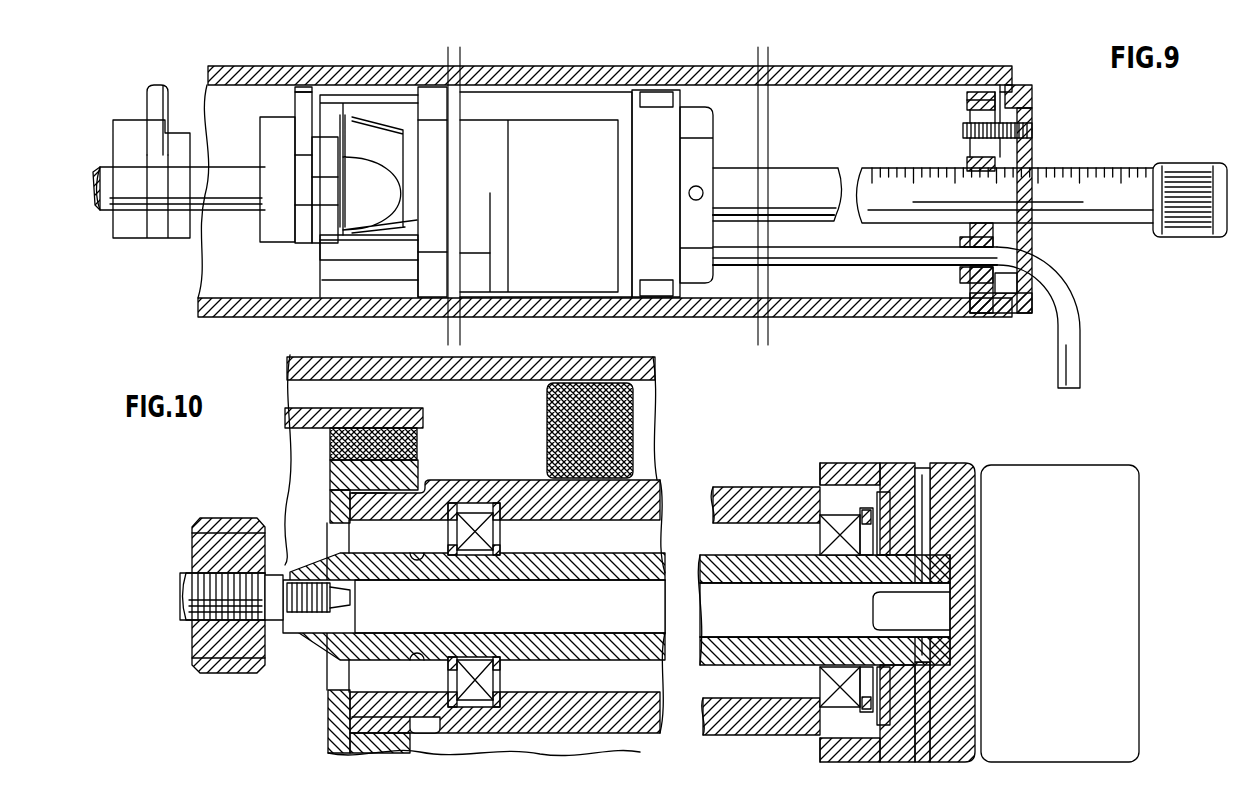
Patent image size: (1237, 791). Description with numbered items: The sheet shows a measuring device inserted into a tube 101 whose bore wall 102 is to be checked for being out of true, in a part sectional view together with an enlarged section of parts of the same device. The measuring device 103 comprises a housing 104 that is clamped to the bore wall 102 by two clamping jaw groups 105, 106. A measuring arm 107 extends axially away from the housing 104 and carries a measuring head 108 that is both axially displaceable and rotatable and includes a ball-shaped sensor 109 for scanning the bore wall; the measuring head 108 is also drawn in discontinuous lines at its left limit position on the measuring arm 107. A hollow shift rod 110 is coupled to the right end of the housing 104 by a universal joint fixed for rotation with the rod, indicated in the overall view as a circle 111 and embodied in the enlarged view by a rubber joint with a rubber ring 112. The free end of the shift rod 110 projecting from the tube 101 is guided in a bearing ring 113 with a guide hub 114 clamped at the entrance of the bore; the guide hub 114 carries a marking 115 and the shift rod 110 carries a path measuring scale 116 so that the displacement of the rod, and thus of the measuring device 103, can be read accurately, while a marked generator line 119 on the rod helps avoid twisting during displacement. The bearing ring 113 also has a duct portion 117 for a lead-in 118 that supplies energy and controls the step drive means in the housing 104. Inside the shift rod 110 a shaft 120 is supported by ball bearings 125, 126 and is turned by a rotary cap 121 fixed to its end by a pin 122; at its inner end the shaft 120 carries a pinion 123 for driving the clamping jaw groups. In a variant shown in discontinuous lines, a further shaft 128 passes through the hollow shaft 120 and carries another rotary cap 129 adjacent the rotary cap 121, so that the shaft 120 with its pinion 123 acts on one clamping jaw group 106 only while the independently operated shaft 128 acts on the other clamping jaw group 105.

In FIG. 9, the tube 101 is at (870, 72).
In FIG. 9, the bore wall 102 is at (915, 100).
In FIG. 10, the bore wall 102 is at (311, 384).
In FIG. 9, the measuring device 103 is at (534, 110).
In FIG. 9, the housing 104 is at (592, 121).
In FIG. 10, the housing 104 is at (335, 407).
In FIG. 9, the clamping jaw group 105 is at (382, 96).
In FIG. 9, the clamping jaw group 106 is at (660, 92).
In FIG. 9, the measuring arm 107 is at (231, 182).
In FIG. 9, the measuring head 108 is at (126, 118).
In FIG. 9, the ball-shaped sensor 109 is at (306, 87).
In FIG. 9, the shift rod 110 is at (797, 160).
In FIG. 10, the shift rod 110 is at (792, 486).
In FIG. 9, the universal joint 111 is at (696, 186).
In FIG. 10, the rubber ring 112 is at (371, 440).
In FIG. 9, the bearing ring 113 is at (1032, 100).
In FIG. 9, the guide hub 114 is at (1020, 236).
In FIG. 9, the marking 115 is at (1002, 165).
In FIG. 9, the path measuring scale 116 is at (1078, 169).
In FIG. 9, the duct portion 117 is at (1000, 308).
In FIG. 9, the lead-in 118 is at (1080, 332).
In FIG. 9, the marked generator line 119 is at (1073, 206).
In FIG. 10, the shaft 120 is at (748, 553).
In FIG. 9, the rotary cap 121 is at (1182, 165).
In FIG. 10, the rotary cap 121 is at (877, 467).
In FIG. 10, the pin 122 is at (923, 468).
In FIG. 10, the pinion 123 is at (200, 557).
In FIG. 10, the ball bearing 125 is at (472, 515).
In FIG. 10, the ball bearing 126 is at (840, 517).
In FIG. 10, the shaft 128 is at (872, 604).
In FIG. 10, the rotary cap 129 is at (1040, 477).